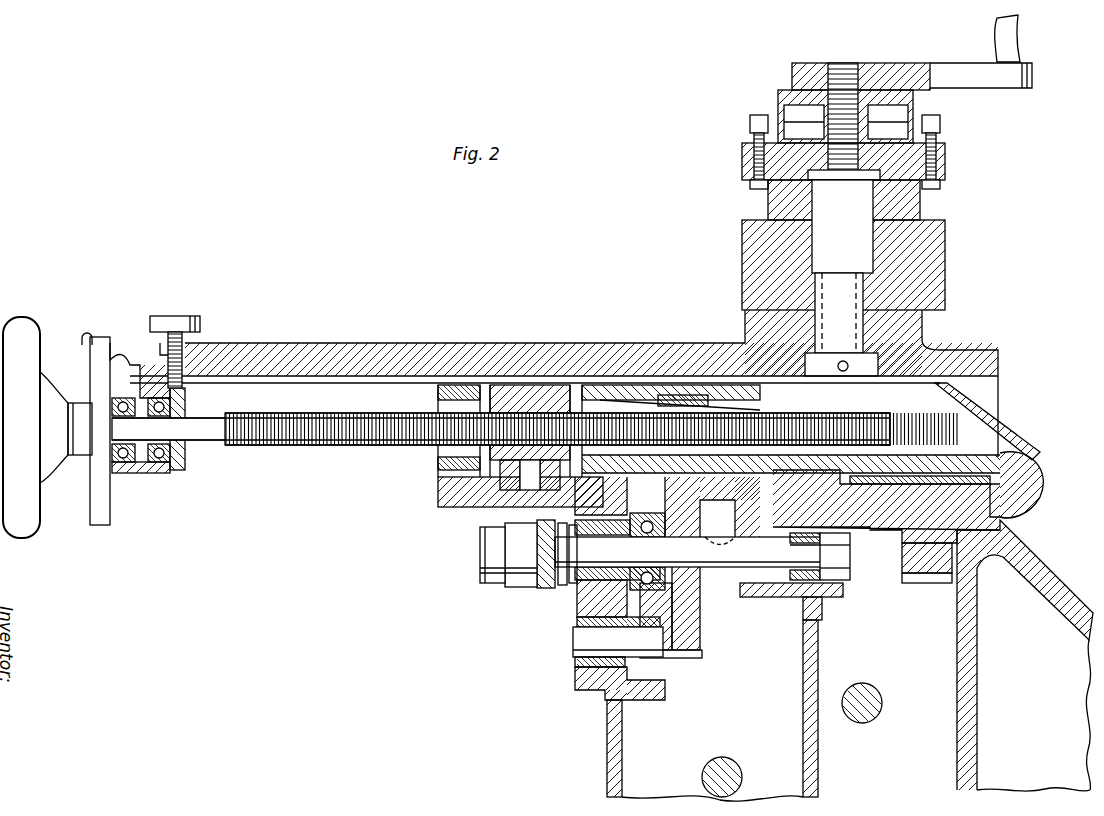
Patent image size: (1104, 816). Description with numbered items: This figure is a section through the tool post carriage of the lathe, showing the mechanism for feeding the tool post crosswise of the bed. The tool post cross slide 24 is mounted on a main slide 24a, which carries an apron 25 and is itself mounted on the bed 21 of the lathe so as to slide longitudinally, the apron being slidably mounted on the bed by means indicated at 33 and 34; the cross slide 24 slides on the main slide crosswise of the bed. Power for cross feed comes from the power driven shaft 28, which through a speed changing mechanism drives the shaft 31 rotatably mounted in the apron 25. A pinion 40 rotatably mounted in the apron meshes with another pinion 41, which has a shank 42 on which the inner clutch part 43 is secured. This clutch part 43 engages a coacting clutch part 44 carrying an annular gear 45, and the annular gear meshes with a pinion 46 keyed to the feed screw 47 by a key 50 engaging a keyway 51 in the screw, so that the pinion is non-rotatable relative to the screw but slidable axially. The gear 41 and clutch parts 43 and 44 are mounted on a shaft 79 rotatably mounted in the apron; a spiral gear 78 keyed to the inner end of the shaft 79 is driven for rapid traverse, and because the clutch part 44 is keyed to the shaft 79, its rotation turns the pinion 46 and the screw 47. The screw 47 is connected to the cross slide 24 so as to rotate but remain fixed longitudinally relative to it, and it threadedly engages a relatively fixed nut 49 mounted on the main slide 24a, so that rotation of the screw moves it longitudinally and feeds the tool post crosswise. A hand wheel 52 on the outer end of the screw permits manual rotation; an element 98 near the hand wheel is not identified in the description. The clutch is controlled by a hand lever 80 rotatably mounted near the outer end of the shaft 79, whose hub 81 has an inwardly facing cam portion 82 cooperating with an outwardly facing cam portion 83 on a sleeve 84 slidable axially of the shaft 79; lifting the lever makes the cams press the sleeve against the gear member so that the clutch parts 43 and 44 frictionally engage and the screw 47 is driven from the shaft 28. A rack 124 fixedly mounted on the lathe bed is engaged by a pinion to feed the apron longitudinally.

The bed 21 is at (976, 662).
The tool post cross slide 24 is at (432, 356).
The main slide 24a is at (1020, 470).
The apron 25 is at (606, 730).
The power driven shaft 28 is at (878, 703).
The shaft 31 is at (732, 766).
The slidable mounting 33 is at (1002, 492).
The slidable mounting 34 is at (955, 478).
The pinion 40 is at (660, 692).
The pinion 41 is at (648, 513).
The shank 42 is at (676, 595).
The clutch part 43 is at (702, 603).
The coacting clutch part 44 is at (702, 622).
The annular gear 45 is at (693, 657).
The pinion 46 is at (690, 393).
The feed screw 47 is at (888, 436).
The nut 49 is at (513, 392).
The key 50 is at (641, 395).
The keyway 51 is at (888, 419).
The hand wheel 52 is at (22, 332).
The spiral gear 78 is at (834, 542).
The shaft 79 is at (765, 598).
The hand lever 80 is at (545, 590).
The hub 81 is at (522, 588).
The inwardly facing cam portion 82 is at (562, 590).
The outwardly facing cam portion 83 is at (572, 590).
The sleeve 84 is at (580, 565).
The ball bearing housing 98 is at (142, 470).
The rack 124 is at (920, 582).